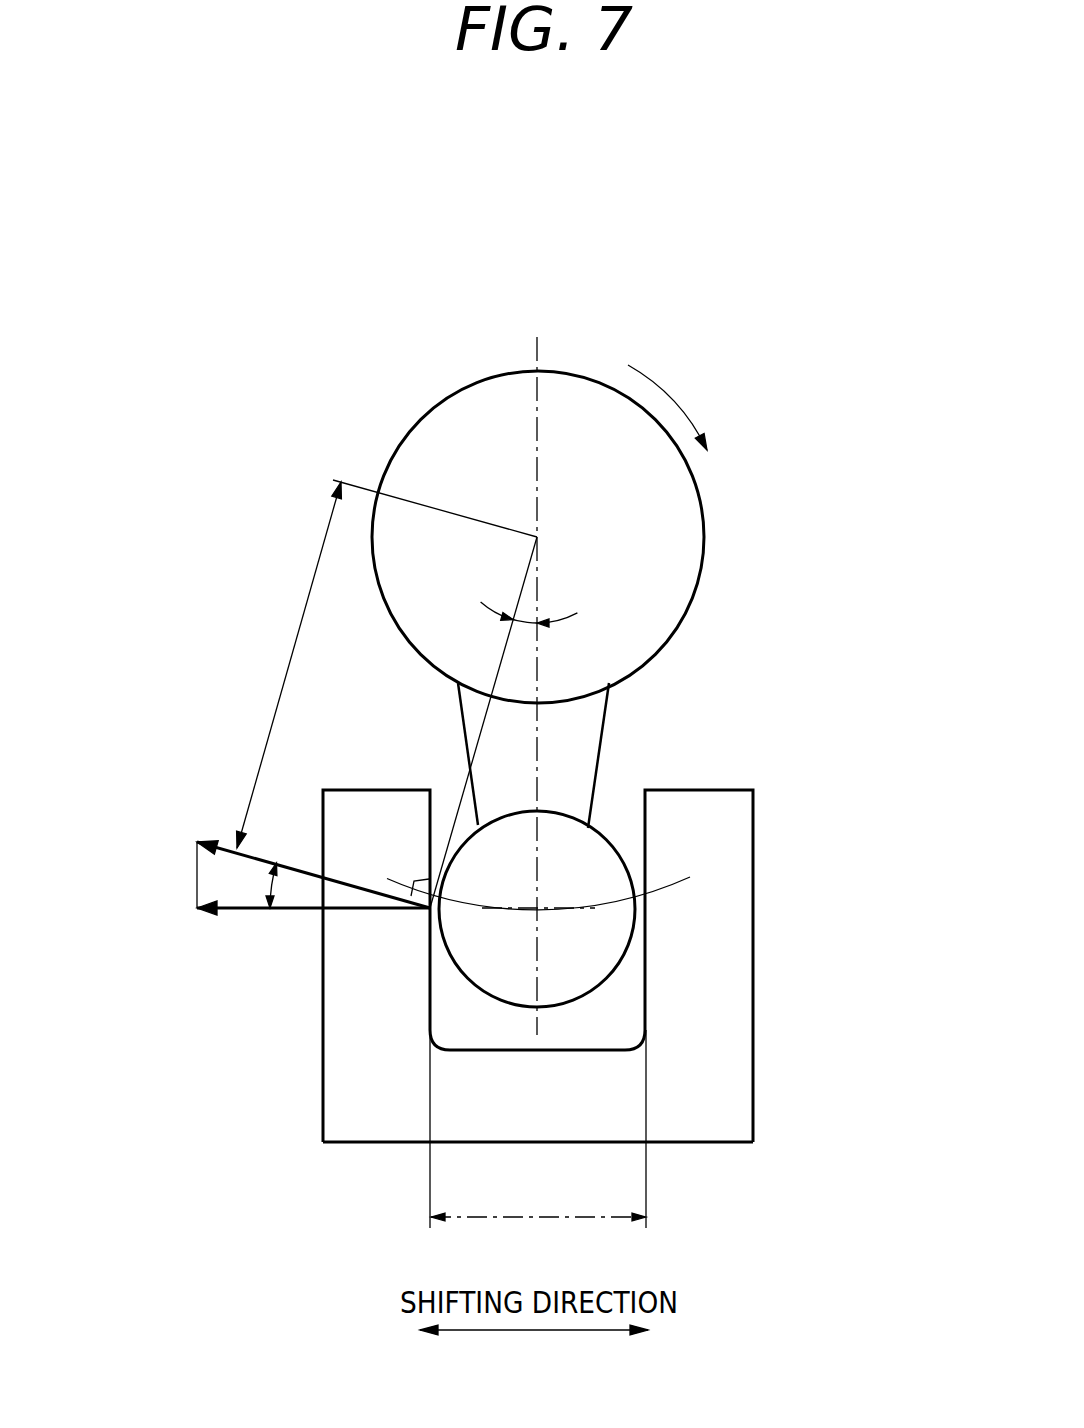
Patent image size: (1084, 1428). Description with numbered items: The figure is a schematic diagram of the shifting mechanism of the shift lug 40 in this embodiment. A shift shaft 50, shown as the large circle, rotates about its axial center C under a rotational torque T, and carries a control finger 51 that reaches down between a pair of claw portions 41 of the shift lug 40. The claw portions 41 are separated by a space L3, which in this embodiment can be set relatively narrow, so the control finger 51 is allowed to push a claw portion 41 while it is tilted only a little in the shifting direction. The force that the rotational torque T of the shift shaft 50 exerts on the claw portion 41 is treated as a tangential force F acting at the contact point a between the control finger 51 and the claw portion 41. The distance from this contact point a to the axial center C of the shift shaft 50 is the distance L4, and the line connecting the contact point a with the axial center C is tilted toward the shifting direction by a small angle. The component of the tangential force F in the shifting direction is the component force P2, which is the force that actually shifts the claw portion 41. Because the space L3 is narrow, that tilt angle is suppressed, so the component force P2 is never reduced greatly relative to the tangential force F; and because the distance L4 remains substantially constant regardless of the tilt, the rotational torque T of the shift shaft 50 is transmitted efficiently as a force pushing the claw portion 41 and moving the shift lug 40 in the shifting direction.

The shift lug 40 is at (695, 1143).
The claw portion 41 is at (740, 845).
The shift shaft 50 is at (460, 425).
The control finger 51 is at (603, 948).
The axial center C is at (538, 537).
The rotational torque T is at (667, 406).
The tangential force F is at (301, 864).
The component force P2 is at (291, 908).
The contact point a is at (427, 910).
The space L3 is at (538, 1199).
The distance L4 is at (289, 665).